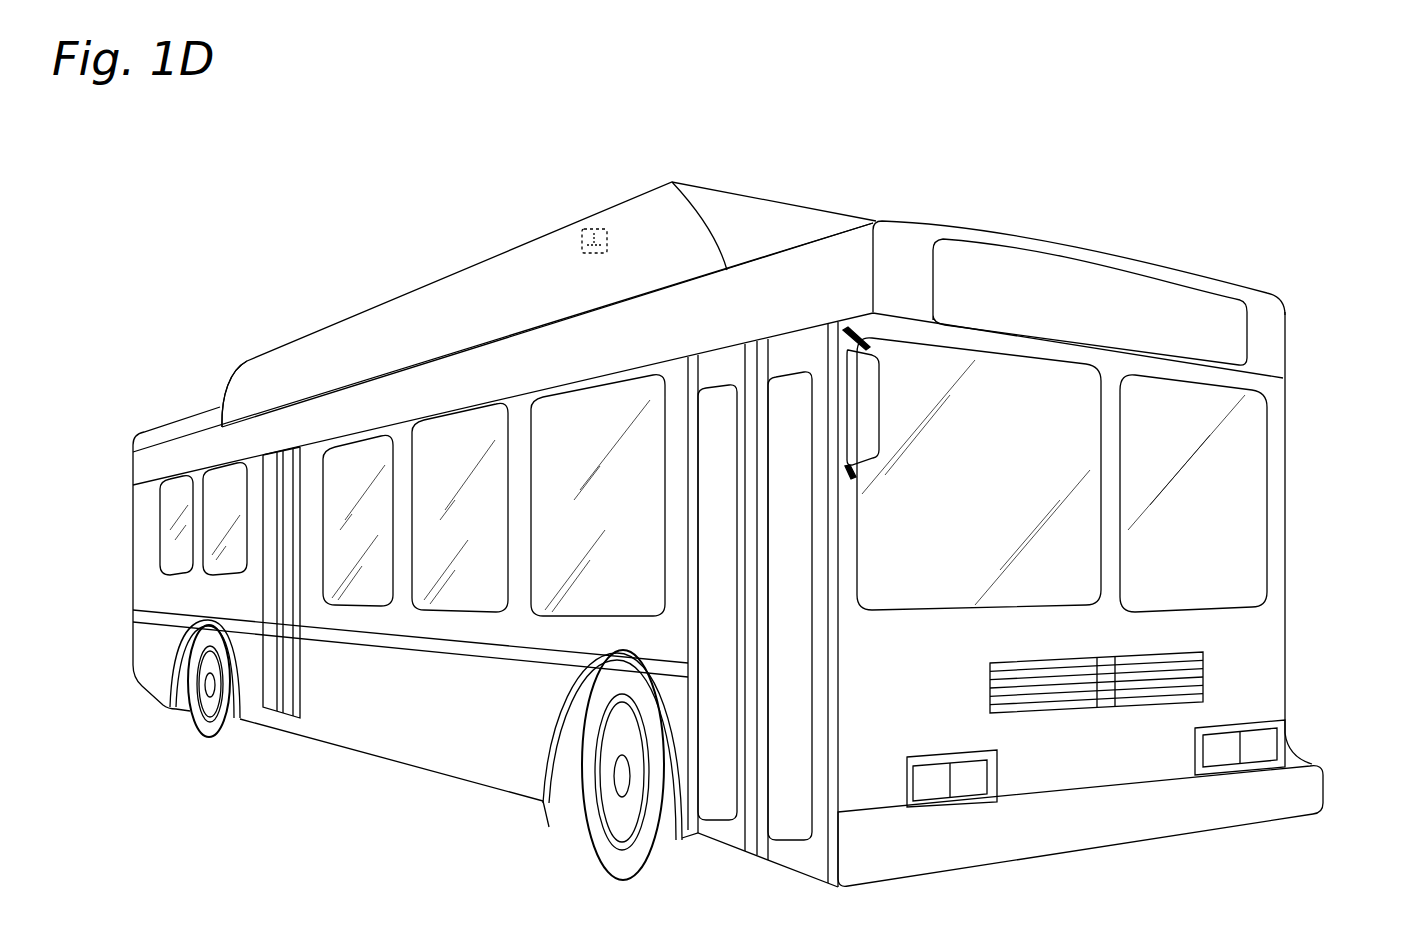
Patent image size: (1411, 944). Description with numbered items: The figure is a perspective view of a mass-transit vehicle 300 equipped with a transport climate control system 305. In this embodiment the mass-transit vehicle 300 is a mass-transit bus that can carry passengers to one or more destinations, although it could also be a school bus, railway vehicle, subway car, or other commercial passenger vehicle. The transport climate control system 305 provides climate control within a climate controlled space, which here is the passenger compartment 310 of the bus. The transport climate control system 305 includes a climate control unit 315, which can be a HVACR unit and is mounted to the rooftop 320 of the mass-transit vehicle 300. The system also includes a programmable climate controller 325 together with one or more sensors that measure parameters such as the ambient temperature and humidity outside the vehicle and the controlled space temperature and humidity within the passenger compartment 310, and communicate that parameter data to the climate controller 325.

The mass-transit vehicle 300 is at (972, 152).
The transport climate control system 305 is at (486, 222).
The passenger compartment 310 is at (1212, 513).
The climate control unit 315 is at (390, 300).
The rooftop 320 is at (1131, 254).
The climate controller 325 is at (594, 228).